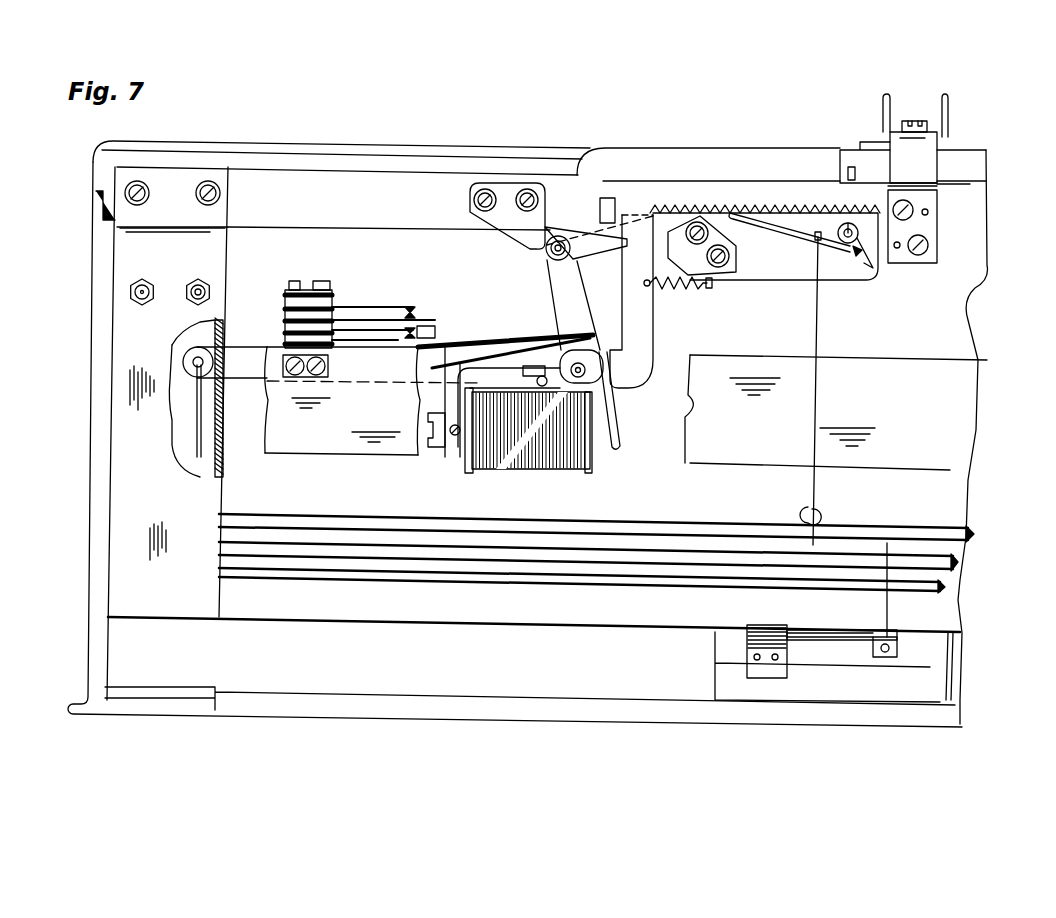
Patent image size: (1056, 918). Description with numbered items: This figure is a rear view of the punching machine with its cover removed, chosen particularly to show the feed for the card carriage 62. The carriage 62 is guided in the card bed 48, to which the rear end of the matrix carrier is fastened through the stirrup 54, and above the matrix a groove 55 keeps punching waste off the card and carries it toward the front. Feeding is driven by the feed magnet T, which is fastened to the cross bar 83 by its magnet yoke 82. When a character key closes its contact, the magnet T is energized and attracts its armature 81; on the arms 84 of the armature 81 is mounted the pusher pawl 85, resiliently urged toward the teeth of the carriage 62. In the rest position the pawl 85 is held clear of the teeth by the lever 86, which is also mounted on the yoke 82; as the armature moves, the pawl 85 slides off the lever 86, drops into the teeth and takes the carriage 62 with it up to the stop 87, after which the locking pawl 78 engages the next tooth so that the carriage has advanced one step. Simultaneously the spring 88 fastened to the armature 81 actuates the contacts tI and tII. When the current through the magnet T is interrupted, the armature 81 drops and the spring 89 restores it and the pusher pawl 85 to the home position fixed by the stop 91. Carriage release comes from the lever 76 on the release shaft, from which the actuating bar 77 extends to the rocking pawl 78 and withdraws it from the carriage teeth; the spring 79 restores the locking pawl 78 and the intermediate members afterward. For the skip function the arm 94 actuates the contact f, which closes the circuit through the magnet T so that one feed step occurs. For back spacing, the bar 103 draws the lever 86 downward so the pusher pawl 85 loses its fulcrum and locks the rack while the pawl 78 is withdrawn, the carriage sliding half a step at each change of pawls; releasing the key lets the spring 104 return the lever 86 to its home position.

The card bed 48 is at (322, 190).
The stop 91 is at (505, 195).
The pusher pawl 85 is at (590, 245).
The arms 84 is at (557, 295).
The armature 81 is at (617, 447).
The lever 86 is at (193, 355).
The bar 103 is at (196, 435).
The cross bar 83 is at (310, 443).
The contact tII is at (408, 307).
The contact tI is at (415, 325).
The spring 88 is at (461, 344).
The spring 89 is at (485, 350).
The feed magnet T is at (528, 466).
The magnet yoke 82 is at (447, 460).
The card carriage 62 is at (812, 204).
The stop 87 is at (680, 228).
The locking pawl 78 is at (767, 226).
The spring 79 is at (866, 282).
The spring 104 is at (668, 278).
The stirrup 54 is at (930, 163).
The groove 55 is at (952, 108).
The lever 76 is at (830, 531).
The actuating bar 77 is at (820, 505).
The arm 94 is at (887, 622).
The contact f is at (868, 645).